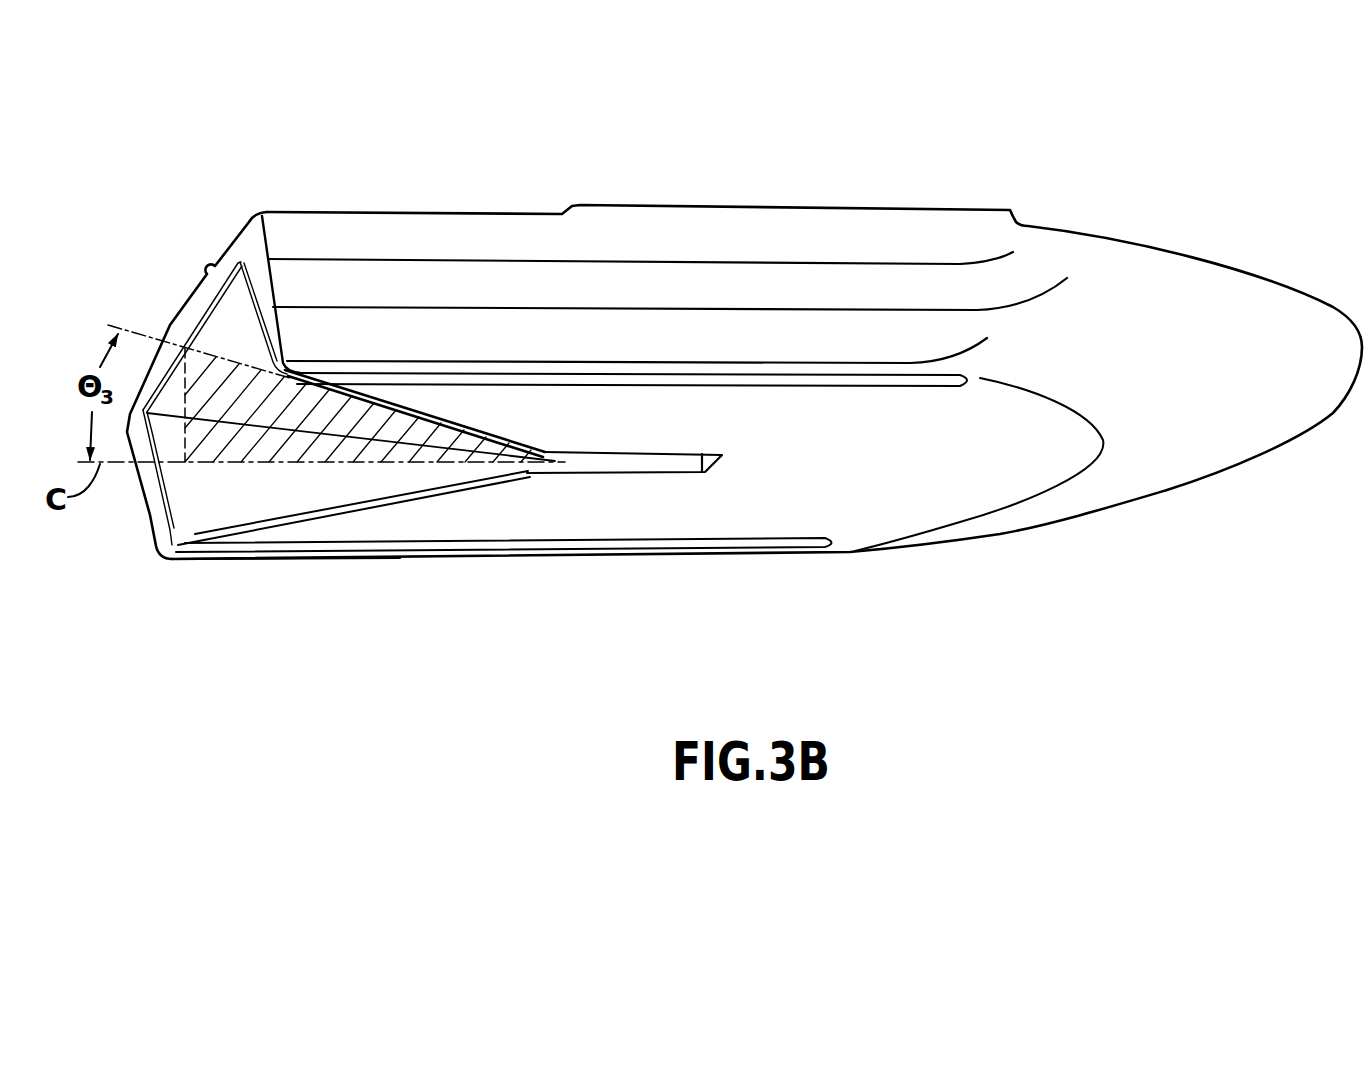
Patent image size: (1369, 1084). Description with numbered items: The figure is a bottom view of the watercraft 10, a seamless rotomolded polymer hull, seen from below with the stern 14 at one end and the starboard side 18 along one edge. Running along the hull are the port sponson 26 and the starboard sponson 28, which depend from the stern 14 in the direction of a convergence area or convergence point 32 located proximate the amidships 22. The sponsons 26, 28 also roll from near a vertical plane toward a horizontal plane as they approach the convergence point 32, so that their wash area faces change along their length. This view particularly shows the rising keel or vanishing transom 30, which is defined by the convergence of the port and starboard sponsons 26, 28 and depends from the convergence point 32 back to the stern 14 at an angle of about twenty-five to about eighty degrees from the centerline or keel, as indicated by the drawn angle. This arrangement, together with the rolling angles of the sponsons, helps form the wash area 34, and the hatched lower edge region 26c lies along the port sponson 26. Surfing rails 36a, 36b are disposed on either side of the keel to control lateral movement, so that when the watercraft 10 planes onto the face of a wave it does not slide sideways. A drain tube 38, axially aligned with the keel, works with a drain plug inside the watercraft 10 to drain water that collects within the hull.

The watercraft 10 is at (542, 170).
The stern 14 is at (177, 259).
The starboard side 18 is at (828, 240).
The amidships 22 is at (933, 479).
The port sponson 26 is at (195, 502).
The flap bottom edge 26c is at (268, 565).
The starboard sponson 28 is at (265, 320).
The vanishing transom 30 is at (228, 312).
The convergence point 32 is at (538, 484).
The wash area 34 is at (251, 497).
The surfing rail 36a is at (458, 547).
The surfing rail 36b is at (752, 380).
The drain tube 38 is at (695, 458).